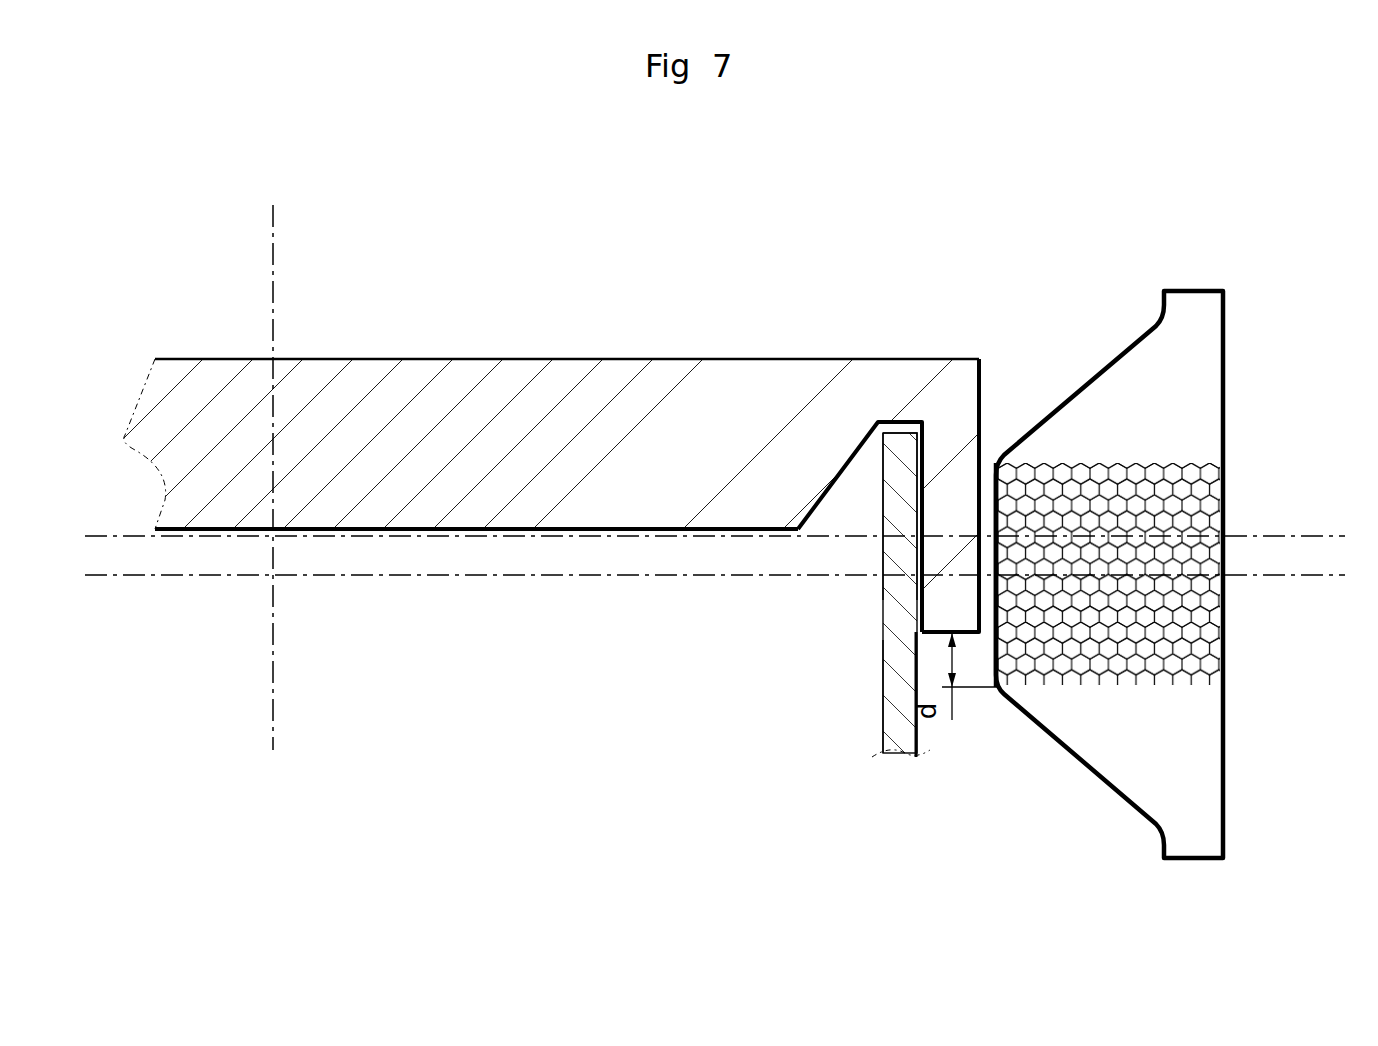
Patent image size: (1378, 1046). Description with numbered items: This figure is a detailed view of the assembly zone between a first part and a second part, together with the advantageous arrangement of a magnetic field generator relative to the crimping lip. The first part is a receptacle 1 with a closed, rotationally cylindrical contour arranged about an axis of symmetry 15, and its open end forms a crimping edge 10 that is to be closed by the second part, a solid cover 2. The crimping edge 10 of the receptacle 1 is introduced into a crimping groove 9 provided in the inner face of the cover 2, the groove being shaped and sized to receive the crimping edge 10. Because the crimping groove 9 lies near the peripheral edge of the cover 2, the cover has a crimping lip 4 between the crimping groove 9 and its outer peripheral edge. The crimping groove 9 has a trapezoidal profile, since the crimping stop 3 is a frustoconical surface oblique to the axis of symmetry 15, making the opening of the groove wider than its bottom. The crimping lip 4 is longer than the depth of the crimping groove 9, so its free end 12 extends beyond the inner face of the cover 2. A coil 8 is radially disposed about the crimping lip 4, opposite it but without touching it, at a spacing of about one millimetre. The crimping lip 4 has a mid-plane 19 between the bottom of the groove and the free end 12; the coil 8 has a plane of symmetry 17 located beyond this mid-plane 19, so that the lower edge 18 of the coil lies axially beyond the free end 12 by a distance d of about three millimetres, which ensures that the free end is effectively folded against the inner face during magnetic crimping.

The receptacle 1 is at (903, 718).
The cover 2 is at (587, 443).
The crimping stop 3 is at (850, 452).
The crimping lip 4 is at (950, 547).
The coil 8 is at (1180, 516).
The crimping groove 9 is at (846, 501).
The crimping edge 10 is at (905, 520).
The free end 12 is at (925, 614).
The axis of symmetry 15 is at (288, 290).
The plane of symmetry 17 is at (1284, 584).
The lower edge 18 is at (991, 697).
The mid-plane 19 is at (1307, 532).